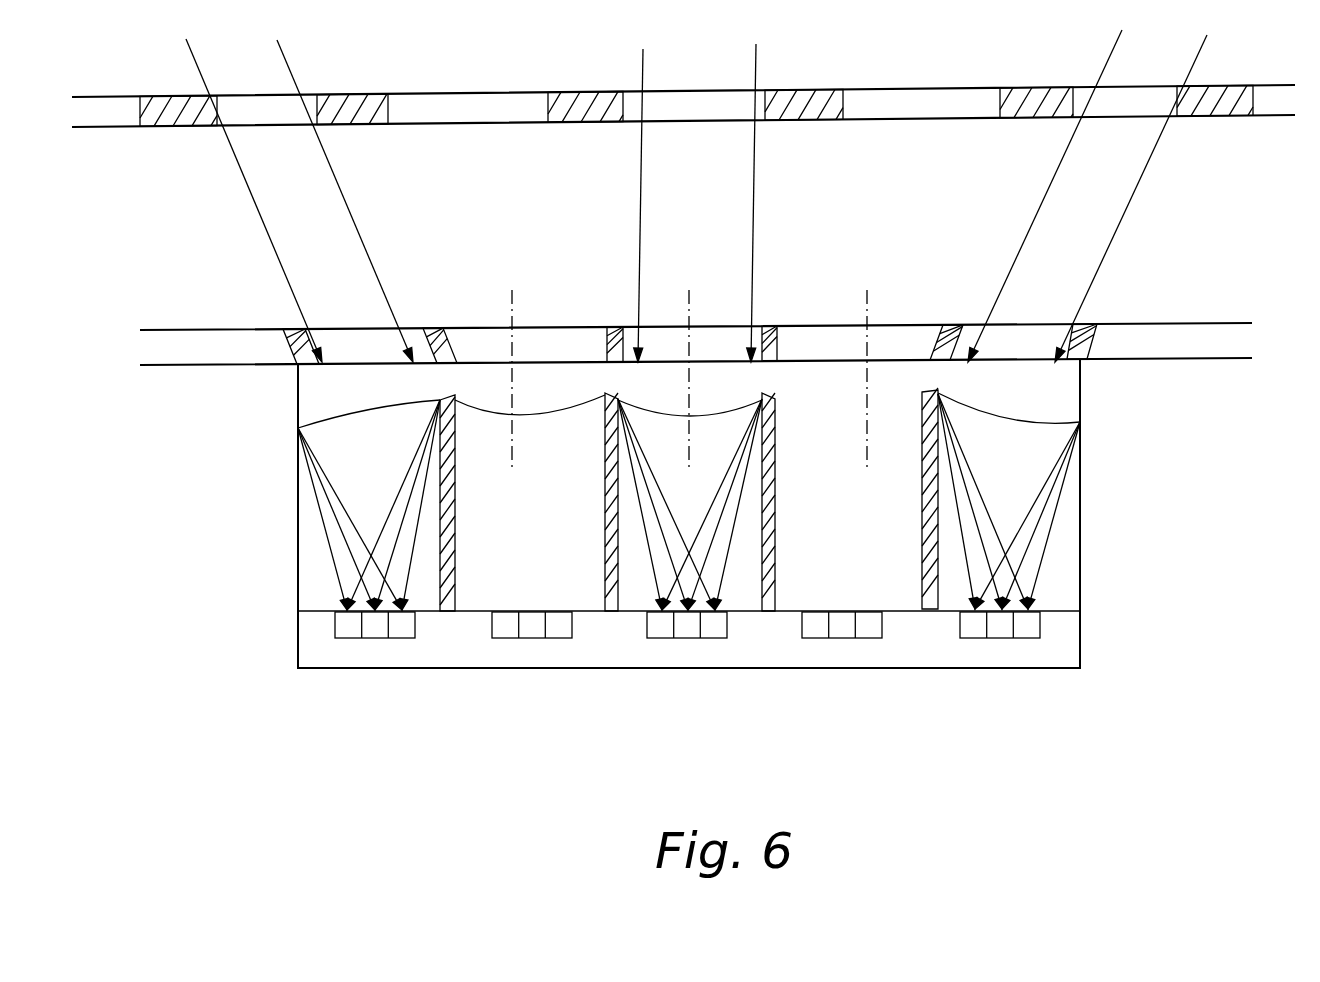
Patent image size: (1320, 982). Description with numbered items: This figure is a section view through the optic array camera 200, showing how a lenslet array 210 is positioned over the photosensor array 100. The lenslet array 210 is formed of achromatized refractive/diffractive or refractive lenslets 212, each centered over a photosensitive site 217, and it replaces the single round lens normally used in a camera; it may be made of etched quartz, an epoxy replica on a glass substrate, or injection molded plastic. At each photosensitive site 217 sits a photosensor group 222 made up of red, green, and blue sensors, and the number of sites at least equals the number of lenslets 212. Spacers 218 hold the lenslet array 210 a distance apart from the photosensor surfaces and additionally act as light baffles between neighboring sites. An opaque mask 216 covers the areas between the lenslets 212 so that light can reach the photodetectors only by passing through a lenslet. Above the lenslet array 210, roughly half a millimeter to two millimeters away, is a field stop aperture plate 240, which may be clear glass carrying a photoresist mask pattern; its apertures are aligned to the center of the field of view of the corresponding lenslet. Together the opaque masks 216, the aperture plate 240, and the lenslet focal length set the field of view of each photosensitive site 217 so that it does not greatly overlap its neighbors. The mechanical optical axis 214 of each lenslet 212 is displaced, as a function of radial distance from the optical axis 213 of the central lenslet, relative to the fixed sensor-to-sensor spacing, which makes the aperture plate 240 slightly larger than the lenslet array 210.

The field stop aperture plate 240 is at (355, 93).
The opaque mask 216 is at (437, 328).
The optical axis of the central lenslet 213 is at (690, 298).
The mechanical optical axis 214 is at (868, 300).
The lenslet 212 is at (342, 422).
The lenslet array 210 is at (1082, 388).
The optic array camera 200 is at (1100, 505).
The photosensor array 100 is at (1082, 642).
The photosensitive site 217 is at (620, 651).
The spacer 218 is at (920, 568).
The photosensor group 222 is at (340, 641).